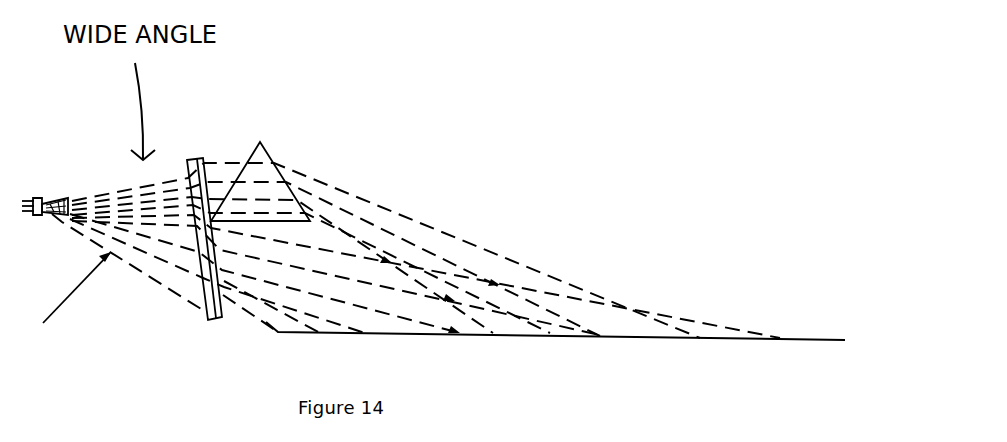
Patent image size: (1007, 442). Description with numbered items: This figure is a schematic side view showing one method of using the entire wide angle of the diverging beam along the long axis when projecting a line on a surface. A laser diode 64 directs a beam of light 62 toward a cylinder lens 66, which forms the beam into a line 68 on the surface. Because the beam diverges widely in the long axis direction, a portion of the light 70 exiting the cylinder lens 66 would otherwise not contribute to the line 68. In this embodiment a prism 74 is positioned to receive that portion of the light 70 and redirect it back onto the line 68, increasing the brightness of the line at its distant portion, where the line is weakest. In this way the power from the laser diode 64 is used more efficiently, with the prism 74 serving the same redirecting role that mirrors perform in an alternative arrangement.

The beam of light 62 is at (173, 292).
The laser diode 64 is at (38, 200).
The cylinder lens 66 is at (190, 159).
The line 68 is at (516, 337).
The portion of the light 70 is at (220, 180).
The prism 74 is at (260, 142).